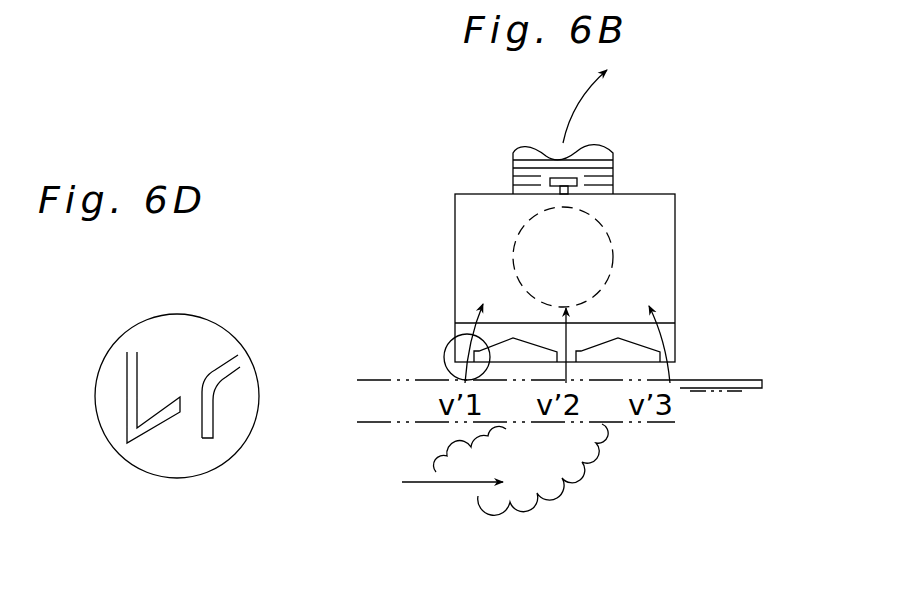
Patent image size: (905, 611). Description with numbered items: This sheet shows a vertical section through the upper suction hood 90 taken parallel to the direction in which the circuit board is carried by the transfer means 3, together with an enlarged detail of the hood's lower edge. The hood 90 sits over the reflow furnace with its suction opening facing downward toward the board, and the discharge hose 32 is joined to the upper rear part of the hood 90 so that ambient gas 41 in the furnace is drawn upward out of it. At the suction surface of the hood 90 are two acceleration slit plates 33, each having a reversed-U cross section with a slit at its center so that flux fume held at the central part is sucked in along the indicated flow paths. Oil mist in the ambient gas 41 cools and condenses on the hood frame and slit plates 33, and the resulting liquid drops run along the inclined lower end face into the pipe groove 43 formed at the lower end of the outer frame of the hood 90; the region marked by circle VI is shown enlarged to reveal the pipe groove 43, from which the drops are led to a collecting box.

In FIG. 6B, the upper suction hood 90 is at (453, 228).
In FIG. 6B, the discharge hose 32 is at (532, 175).
In FIG. 6B, the acceleration slit plates 33 is at (522, 347).
In FIG. 6B, the circle VI is at (441, 357).
In FIG. 6B, the transfer means 3 is at (717, 376).
In FIG. 6B, the ambient gas 41 is at (438, 483).
In FIG. 6D, the pipe groove 43 is at (170, 340).